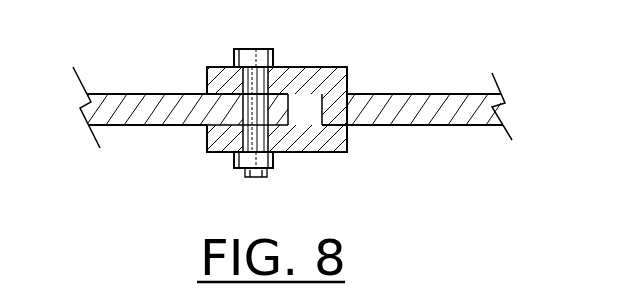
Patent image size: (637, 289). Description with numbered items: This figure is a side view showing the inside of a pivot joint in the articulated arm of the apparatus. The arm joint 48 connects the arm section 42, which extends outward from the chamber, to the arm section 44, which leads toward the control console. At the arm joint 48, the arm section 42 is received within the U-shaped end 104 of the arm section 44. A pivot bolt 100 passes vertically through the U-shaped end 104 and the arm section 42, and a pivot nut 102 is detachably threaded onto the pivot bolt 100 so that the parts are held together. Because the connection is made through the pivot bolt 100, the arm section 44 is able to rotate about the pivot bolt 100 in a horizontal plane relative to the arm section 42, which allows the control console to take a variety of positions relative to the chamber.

The arm section 42 is at (150, 94).
The arm section 44 is at (415, 94).
The arm joint 48 is at (337, 152).
The pivot bolt 100 is at (250, 49).
The pivot nut 102 is at (235, 169).
The U-shaped end 104 is at (315, 67).